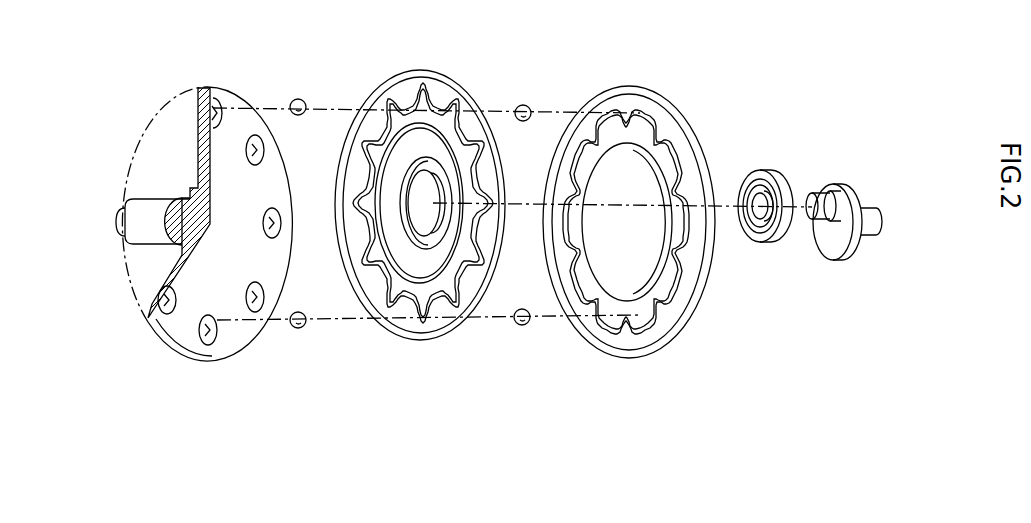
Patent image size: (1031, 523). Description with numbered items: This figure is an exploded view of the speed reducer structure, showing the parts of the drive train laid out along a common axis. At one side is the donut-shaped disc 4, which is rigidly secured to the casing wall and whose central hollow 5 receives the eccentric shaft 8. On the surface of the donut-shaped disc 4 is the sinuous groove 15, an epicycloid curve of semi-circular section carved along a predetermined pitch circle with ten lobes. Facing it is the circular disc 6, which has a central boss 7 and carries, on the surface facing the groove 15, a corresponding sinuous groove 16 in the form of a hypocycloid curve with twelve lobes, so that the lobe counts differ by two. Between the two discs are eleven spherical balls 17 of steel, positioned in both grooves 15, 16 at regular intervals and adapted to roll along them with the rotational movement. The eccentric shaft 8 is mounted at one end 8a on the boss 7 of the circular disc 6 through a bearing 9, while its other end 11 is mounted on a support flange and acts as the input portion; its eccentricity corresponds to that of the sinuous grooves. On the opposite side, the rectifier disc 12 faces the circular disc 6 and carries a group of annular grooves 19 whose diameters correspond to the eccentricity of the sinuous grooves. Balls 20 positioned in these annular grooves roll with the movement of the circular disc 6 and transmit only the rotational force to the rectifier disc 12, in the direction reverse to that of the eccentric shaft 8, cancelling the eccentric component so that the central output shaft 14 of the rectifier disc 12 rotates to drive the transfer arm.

The donut-shaped disc 4 is at (650, 203).
The central hollow 5 is at (653, 165).
The circular disc 6 is at (438, 174).
The central boss 7 is at (448, 190).
The eccentric shaft 8 is at (834, 234).
The one end of the eccentric shaft 8a is at (828, 191).
The bearing 9 is at (769, 176).
The other end of the eccentric shaft 11 is at (879, 215).
The rectifier disc 12 is at (234, 103).
The output shaft 14 is at (148, 240).
The sinuous groove 15 is at (670, 150).
The sinuous groove 16 is at (472, 137).
The spherical balls 17 is at (527, 105).
The annular grooves 19 is at (264, 152).
The balls 20 is at (300, 99).